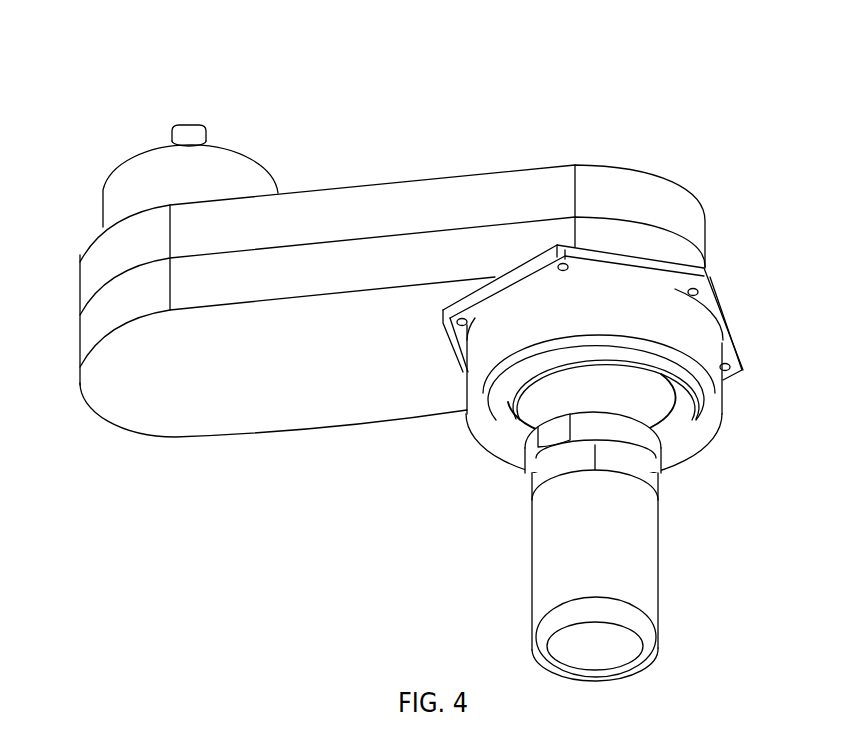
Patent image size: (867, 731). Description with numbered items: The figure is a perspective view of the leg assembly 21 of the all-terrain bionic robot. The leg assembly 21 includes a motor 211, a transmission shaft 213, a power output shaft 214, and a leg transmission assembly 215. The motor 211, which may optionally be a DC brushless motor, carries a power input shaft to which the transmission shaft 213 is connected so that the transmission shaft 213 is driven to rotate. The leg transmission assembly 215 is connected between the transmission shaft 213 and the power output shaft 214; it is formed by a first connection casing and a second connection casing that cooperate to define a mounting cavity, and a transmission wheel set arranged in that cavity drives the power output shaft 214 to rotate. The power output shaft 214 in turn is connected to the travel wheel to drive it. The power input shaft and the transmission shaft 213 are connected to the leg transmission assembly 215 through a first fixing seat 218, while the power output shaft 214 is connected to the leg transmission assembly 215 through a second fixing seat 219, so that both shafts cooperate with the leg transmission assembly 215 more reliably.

The leg assembly 21 is at (637, 35).
The motor 211 is at (638, 553).
The transmission shaft 213 is at (640, 398).
The power output shaft 214 is at (183, 130).
The leg transmission assembly 215 is at (453, 200).
The first fixing seat 218 is at (718, 302).
The second fixing seat 219 is at (152, 177).